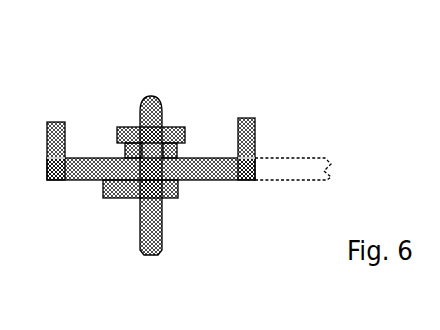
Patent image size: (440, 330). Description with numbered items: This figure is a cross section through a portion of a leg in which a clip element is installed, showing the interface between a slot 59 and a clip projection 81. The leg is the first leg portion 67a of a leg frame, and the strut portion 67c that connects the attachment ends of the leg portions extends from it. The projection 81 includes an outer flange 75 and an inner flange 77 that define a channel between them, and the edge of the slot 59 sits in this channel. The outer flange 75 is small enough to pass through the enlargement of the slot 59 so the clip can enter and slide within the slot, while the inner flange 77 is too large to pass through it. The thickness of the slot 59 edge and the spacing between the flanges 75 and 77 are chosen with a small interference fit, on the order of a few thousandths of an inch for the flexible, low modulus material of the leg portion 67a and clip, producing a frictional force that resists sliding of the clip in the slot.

The slot 59 is at (174, 199).
The first leg portion 67a is at (57, 121).
The strut portion 67c is at (273, 181).
The outer flange 75 is at (175, 127).
The inner flange 77 is at (112, 199).
The projection 81 is at (147, 94).